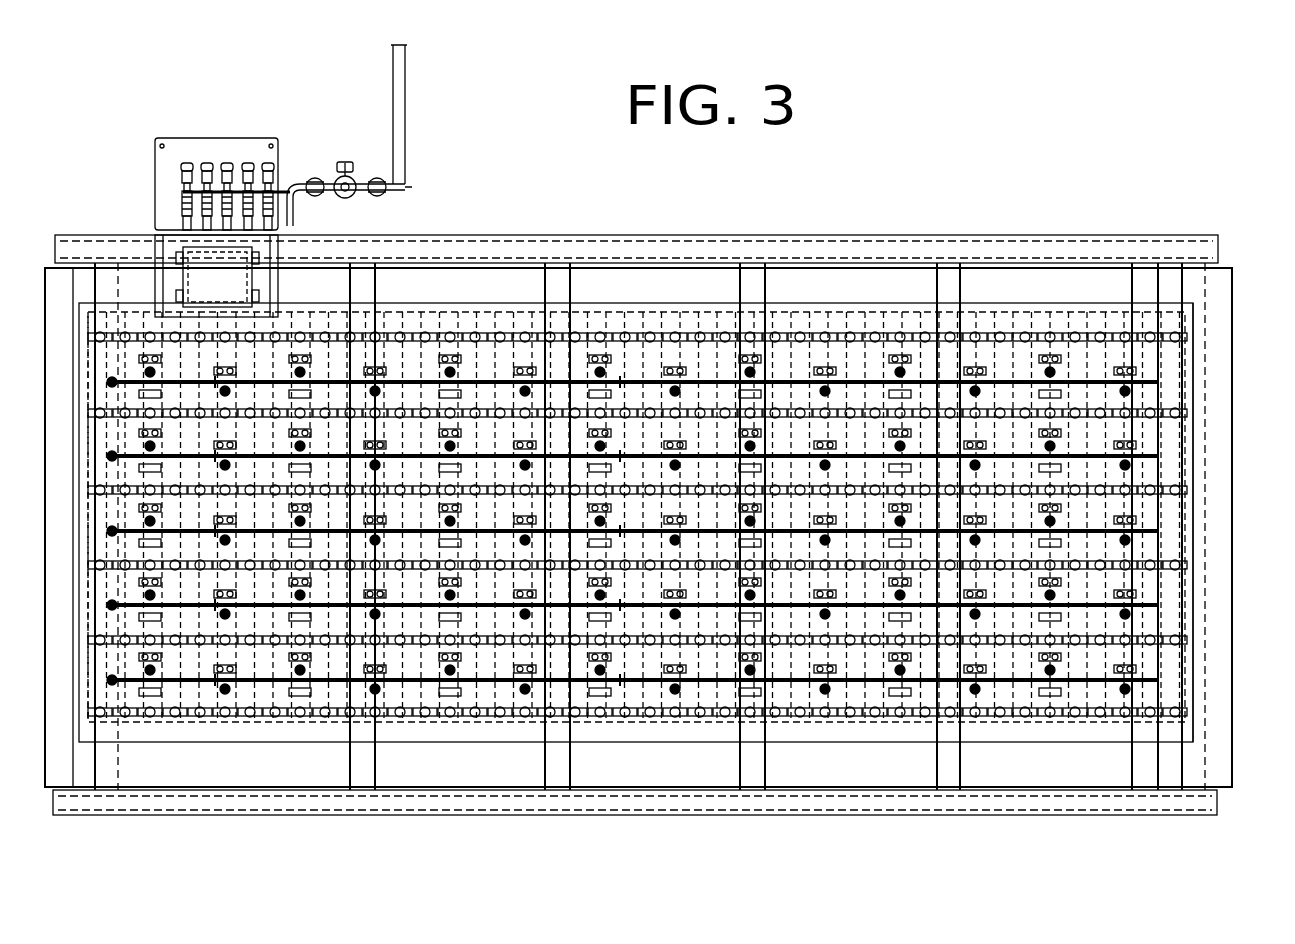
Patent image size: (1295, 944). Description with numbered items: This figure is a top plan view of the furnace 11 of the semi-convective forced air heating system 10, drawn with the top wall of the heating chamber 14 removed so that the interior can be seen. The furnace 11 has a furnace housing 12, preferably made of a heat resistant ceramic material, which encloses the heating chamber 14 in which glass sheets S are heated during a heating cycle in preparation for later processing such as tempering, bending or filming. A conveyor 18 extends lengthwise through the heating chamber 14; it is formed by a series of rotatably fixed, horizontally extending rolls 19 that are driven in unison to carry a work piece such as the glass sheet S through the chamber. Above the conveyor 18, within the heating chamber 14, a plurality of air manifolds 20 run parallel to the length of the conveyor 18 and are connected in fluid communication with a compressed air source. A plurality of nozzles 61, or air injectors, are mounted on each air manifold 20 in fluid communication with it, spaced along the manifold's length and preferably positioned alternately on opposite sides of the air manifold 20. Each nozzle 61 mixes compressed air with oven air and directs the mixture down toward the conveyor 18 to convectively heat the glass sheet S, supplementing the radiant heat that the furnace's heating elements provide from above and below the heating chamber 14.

The system 10 is at (1052, 158).
The furnace 11 is at (522, 820).
The furnace housing 12 is at (628, 250).
The heating chamber 14 is at (630, 355).
The conveyor 18 is at (800, 335).
The rolls 19 is at (520, 320).
The air manifolds 20 is at (1150, 380).
The nozzles 61 is at (433, 365).
The glass sheet S is at (1215, 692).